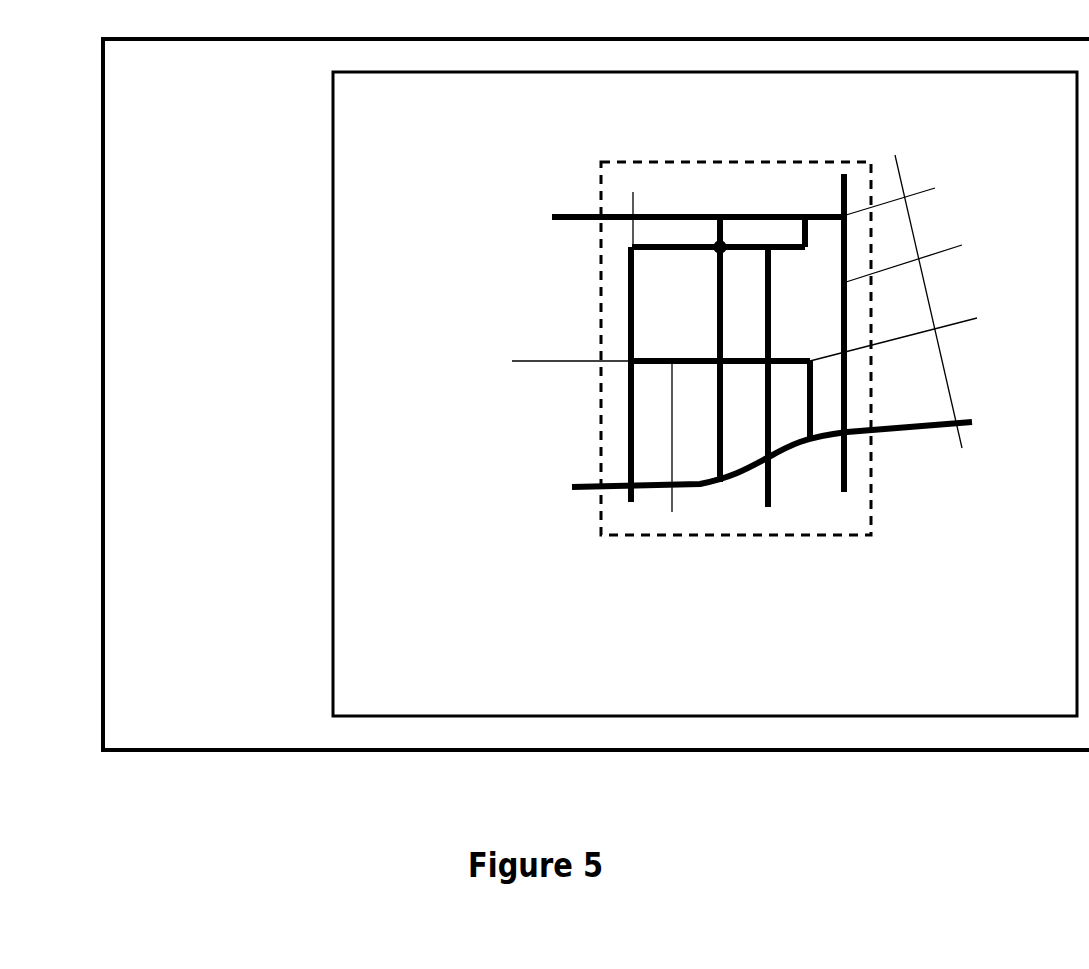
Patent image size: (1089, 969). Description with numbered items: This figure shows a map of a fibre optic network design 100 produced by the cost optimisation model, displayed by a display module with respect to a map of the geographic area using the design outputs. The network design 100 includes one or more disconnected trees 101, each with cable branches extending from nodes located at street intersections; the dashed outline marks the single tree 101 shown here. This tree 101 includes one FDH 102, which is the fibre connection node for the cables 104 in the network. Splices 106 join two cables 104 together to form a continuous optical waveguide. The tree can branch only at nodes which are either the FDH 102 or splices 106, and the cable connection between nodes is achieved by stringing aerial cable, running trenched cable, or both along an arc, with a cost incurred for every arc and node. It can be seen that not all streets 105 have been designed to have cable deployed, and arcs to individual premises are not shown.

The fibre optic network design 100 is at (874, 135).
The tree 101 is at (600, 177).
The FDH 102 is at (727, 247).
The cable 104 is at (783, 248).
The street 105 is at (567, 360).
The splice 106 is at (807, 216).